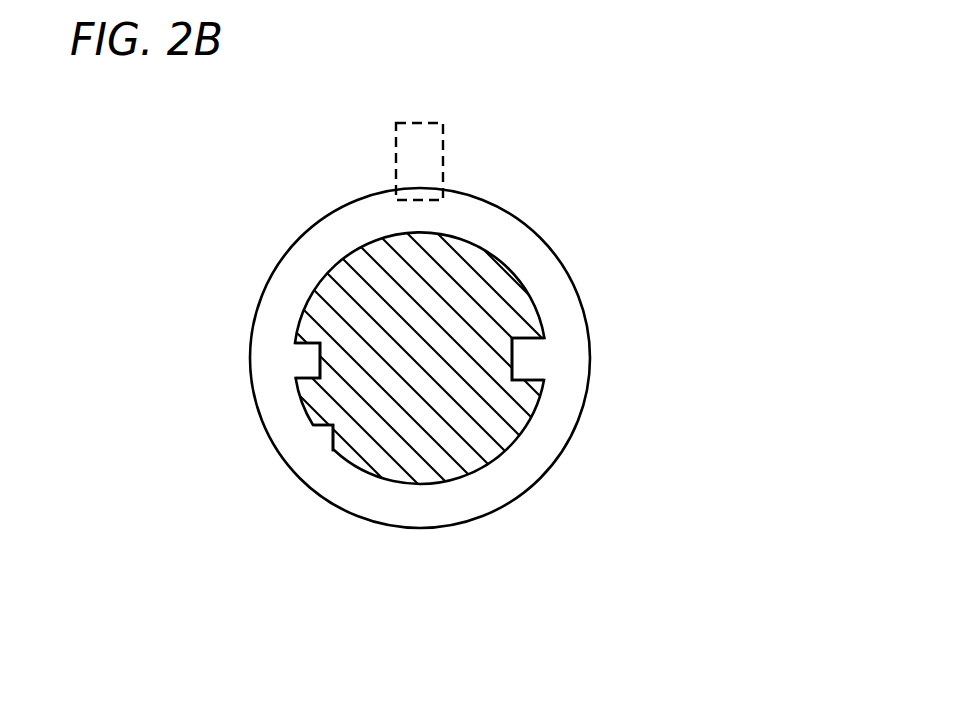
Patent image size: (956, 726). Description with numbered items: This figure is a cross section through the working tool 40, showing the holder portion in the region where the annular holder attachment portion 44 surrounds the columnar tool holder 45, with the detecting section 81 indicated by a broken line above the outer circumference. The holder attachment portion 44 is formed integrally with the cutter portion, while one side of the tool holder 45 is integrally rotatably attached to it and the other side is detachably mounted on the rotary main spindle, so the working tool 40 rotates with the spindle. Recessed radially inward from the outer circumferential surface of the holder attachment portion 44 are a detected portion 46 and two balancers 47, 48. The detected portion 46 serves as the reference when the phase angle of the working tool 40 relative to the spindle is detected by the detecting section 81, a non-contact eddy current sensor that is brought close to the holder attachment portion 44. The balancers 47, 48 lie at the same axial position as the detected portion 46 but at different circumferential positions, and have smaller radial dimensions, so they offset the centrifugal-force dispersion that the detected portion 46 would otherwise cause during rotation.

The working tool 40 is at (586, 540).
The holder attachment portion 44 is at (523, 422).
The tool holder 45 is at (528, 247).
The detected portion 46 is at (527, 339).
The balancer 47 is at (315, 375).
The balancer 48 is at (334, 435).
The detecting section 81 is at (444, 166).